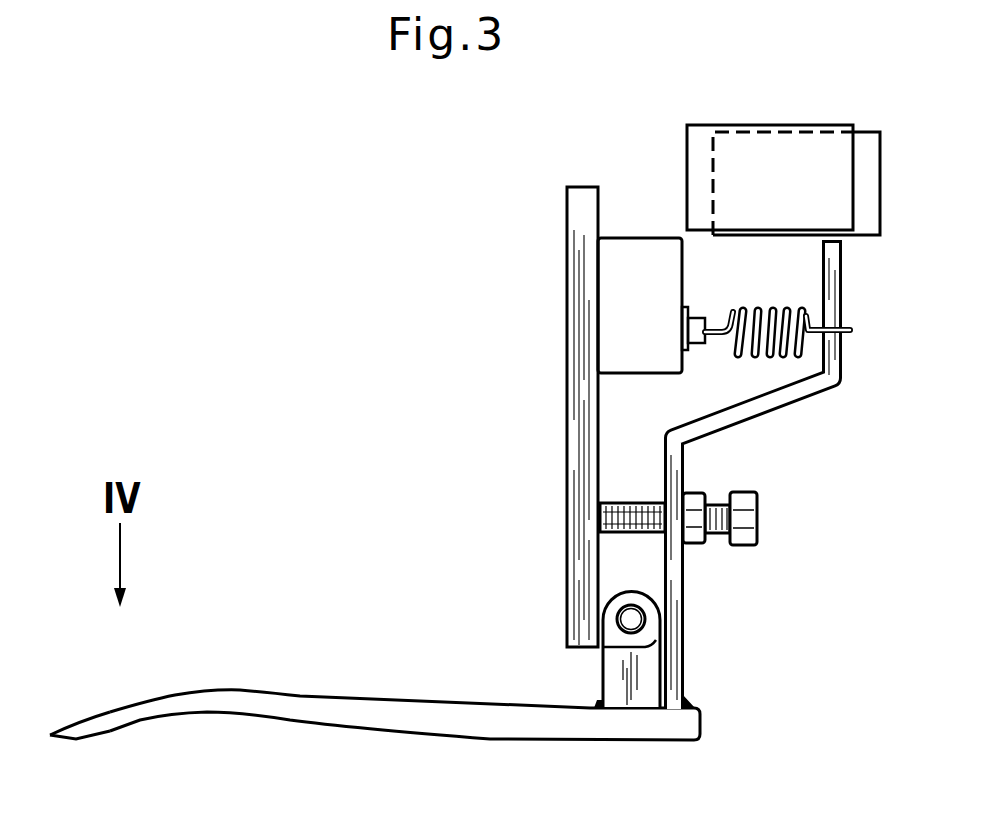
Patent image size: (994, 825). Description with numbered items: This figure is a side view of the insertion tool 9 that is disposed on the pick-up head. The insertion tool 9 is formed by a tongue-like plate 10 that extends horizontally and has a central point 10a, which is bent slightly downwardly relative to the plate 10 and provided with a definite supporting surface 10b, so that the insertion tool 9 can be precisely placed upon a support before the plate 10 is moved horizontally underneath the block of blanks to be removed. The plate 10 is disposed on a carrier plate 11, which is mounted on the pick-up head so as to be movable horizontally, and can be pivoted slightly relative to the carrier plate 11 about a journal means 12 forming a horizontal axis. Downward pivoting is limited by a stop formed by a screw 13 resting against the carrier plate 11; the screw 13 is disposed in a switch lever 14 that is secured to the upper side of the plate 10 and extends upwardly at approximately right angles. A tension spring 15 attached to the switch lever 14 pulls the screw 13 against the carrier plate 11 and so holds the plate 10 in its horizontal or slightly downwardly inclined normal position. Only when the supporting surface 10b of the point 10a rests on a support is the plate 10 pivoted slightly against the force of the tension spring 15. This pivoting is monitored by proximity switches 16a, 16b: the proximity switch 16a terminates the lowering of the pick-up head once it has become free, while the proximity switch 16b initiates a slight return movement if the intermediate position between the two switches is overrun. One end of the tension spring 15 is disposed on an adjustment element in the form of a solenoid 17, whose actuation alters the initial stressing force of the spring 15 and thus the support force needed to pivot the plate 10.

The insertion tool 9 is at (518, 640).
The tongue-like plate 10 is at (420, 720).
The central point 10a is at (68, 730).
The supporting surface 10b is at (72, 740).
The carrier plate 11 is at (577, 387).
The journal means 12 is at (640, 623).
The screw 13 is at (600, 510).
The switch lever 14 is at (758, 408).
The tension spring 15 is at (757, 305).
The proximity switch 16a is at (700, 138).
The proximity switch 16b is at (865, 147).
The solenoid 17 is at (637, 260).